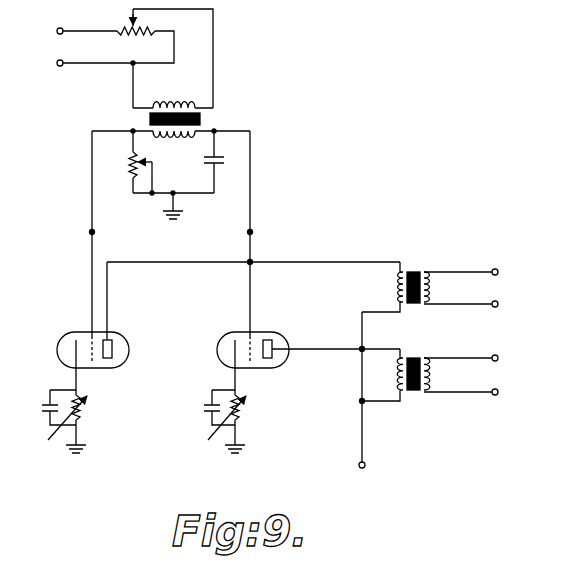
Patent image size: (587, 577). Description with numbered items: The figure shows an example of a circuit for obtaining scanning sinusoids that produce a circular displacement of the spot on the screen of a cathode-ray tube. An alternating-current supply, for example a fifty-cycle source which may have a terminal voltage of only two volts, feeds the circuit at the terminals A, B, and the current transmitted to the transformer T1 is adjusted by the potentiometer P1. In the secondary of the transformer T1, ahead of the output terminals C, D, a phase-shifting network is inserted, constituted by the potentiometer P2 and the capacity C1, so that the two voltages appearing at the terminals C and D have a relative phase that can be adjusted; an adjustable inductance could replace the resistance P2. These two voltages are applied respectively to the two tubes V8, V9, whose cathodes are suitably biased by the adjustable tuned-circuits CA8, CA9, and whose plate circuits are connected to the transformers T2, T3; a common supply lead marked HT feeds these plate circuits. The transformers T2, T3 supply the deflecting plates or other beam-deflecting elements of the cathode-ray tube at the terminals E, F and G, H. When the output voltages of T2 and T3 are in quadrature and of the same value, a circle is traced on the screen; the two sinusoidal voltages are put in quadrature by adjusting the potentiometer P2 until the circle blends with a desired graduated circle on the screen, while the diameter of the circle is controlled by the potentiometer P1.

The input terminal A is at (49, 32).
The input terminal B is at (85, 64).
The potentiometer P1 is at (136, 34).
The transformer T1 is at (191, 120).
The potentiometer P2 is at (158, 163).
The capacity C1 is at (223, 162).
The output terminal C is at (81, 234).
The output terminal D is at (259, 234).
The tube V8 is at (89, 340).
The tube V9 is at (305, 340).
The adjustable tuned-circuit CA8 is at (54, 414).
The adjustable tuned-circuit CA9 is at (214, 414).
The transformer T2 is at (395, 278).
The transformer T3 is at (396, 366).
The output terminal E is at (468, 273).
The output terminal F is at (467, 306).
The output terminal G is at (469, 359).
The output terminal H is at (469, 394).
The high tension supply + HT is at (380, 393).